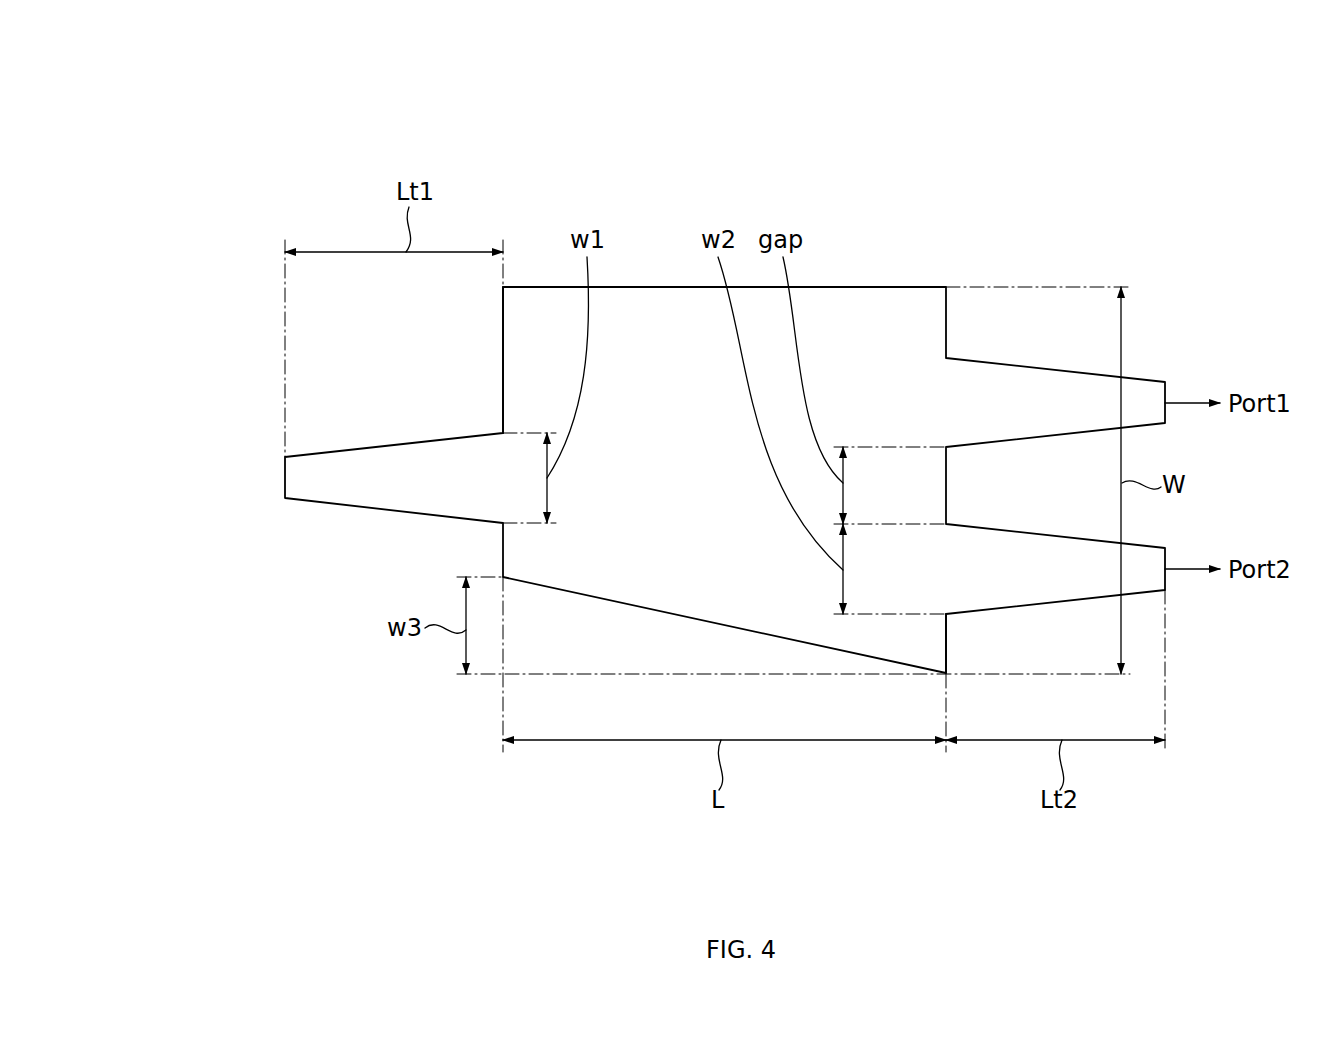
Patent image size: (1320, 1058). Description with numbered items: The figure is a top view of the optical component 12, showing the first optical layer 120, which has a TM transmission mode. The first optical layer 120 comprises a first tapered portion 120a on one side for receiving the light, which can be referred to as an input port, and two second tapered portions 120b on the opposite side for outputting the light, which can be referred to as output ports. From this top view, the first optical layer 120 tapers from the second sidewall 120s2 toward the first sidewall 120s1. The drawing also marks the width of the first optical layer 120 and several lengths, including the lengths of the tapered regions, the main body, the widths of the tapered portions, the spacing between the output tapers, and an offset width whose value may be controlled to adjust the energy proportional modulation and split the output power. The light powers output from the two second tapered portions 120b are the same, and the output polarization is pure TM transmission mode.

The optical component 12 is at (1060, 136).
The first optical layer 120 is at (685, 310).
The first tapered portion 120a is at (330, 468).
The second tapered portions 120b is at (1030, 378).
The first sidewall 120s1 is at (503, 401).
The second sidewall 120s2 is at (946, 633).